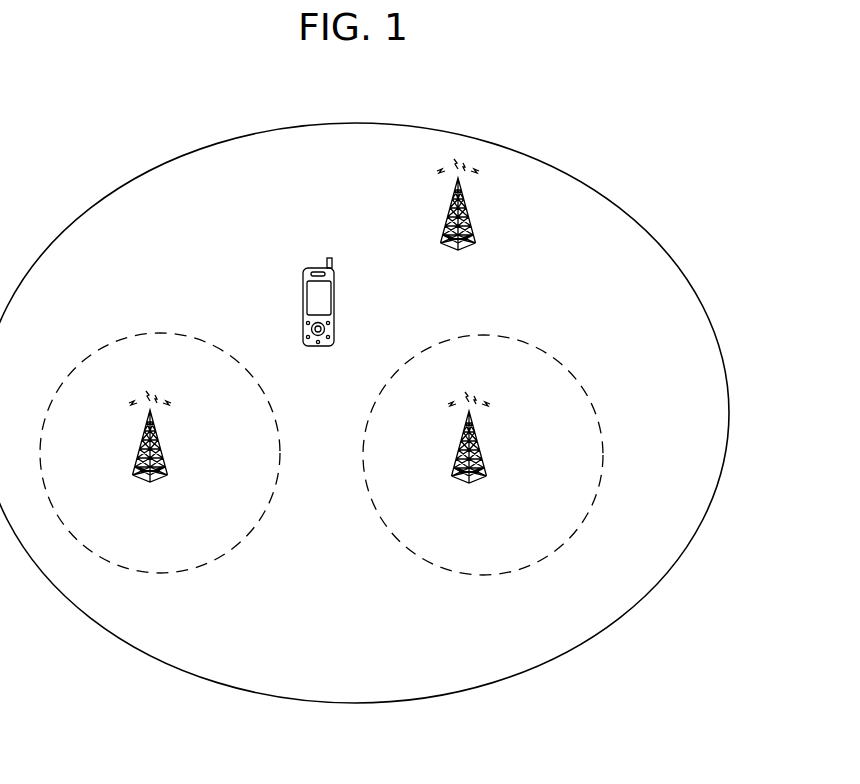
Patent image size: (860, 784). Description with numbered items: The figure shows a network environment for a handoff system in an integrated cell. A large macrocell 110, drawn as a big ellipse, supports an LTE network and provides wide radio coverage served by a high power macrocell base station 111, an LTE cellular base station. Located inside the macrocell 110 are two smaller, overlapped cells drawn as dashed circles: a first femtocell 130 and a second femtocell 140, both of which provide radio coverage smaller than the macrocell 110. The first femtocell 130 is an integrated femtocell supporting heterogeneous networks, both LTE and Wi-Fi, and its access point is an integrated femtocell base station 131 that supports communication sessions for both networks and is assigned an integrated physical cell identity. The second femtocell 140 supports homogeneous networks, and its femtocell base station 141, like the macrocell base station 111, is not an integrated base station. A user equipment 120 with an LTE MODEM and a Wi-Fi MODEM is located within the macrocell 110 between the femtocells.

The macrocell 110 is at (507, 148).
The macrocell base station 111 is at (470, 222).
The user equipment 120 is at (335, 283).
The first femtocell 130 is at (233, 359).
The integrated femtocell base station 131 is at (163, 450).
The second femtocell 140 is at (553, 359).
The femtocell base station 141 is at (482, 450).